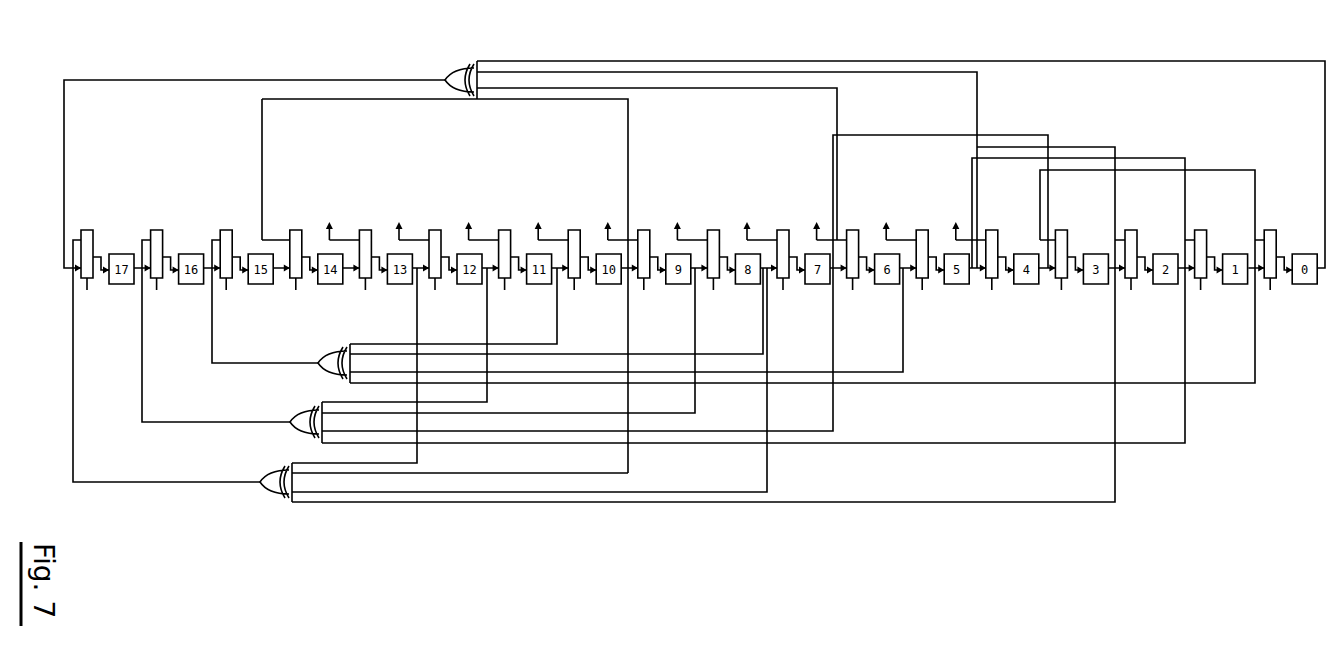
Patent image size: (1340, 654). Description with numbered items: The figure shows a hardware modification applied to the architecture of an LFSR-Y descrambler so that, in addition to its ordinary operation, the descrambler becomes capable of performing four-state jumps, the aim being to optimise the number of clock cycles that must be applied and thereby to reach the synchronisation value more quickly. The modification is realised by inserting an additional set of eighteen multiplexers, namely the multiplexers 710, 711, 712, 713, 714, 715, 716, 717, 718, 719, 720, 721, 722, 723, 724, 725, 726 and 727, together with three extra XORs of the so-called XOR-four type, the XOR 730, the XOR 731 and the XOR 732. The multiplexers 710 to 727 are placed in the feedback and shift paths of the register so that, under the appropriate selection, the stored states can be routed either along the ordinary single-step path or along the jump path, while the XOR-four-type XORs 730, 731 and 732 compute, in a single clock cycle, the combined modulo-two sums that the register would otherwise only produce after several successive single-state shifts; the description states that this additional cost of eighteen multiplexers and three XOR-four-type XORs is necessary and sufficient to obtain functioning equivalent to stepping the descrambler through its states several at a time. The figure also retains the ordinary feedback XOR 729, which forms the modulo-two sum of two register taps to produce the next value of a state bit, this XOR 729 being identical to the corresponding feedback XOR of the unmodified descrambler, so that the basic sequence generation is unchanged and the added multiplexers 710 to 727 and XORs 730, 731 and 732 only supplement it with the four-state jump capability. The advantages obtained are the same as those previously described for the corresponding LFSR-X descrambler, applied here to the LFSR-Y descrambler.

The multiplexer 710 is at (87, 230).
The multiplexer 711 is at (156, 230).
The multiplexer 712 is at (226, 230).
The multiplexer 713 is at (296, 230).
The multiplexer 714 is at (366, 230).
The multiplexer 715 is at (435, 230).
The multiplexer 716 is at (505, 230).
The multiplexer 717 is at (574, 230).
The multiplexer 718 is at (644, 230).
The multiplexer 719 is at (713, 230).
The multiplexer 720 is at (783, 230).
The multiplexer 721 is at (853, 230).
The multiplexer 722 is at (922, 230).
The multiplexer 723 is at (992, 230).
The multiplexer 724 is at (1061, 230).
The multiplexer 725 is at (1131, 230).
The multiplexer 726 is at (1201, 230).
The multiplexer 727 is at (1270, 230).
The XOR 729 is at (458, 65).
The XOR4-type XOR 730 is at (319, 376).
The XOR4-type XOR 731 is at (291, 434).
The XOR4-type XOR 732 is at (262, 492).